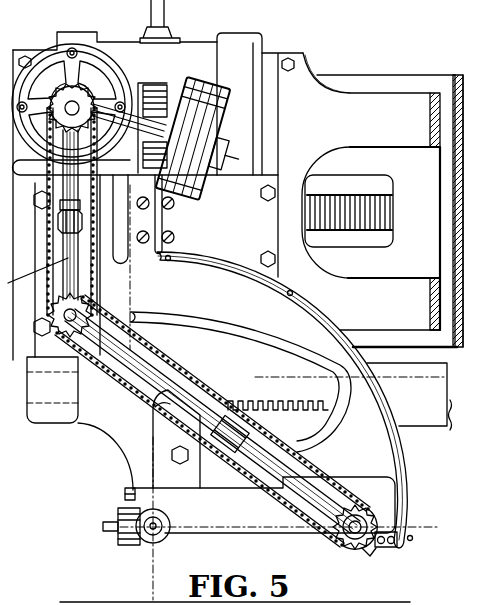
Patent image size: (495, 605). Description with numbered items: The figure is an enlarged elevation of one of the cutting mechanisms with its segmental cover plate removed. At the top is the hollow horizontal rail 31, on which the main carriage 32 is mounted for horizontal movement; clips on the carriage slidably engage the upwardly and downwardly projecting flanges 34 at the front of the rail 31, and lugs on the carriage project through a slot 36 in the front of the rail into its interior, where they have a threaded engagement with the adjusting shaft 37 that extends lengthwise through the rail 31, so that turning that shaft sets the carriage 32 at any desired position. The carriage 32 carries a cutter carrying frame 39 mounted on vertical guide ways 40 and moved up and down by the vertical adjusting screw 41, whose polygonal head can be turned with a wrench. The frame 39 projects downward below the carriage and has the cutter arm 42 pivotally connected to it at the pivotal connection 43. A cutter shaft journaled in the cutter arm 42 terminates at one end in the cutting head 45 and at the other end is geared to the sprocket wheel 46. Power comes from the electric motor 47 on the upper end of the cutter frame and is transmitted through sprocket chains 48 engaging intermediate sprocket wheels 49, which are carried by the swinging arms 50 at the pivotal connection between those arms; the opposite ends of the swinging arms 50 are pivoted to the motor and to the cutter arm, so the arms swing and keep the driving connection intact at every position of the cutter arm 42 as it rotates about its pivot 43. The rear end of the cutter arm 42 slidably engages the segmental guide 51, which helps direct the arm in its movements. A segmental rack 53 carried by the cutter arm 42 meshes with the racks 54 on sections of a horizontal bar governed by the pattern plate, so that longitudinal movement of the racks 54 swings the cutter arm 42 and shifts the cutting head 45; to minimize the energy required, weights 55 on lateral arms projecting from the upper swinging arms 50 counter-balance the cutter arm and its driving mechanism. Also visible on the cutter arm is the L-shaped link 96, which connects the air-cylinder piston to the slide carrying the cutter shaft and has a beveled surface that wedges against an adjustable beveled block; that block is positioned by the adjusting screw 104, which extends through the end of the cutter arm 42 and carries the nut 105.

The hollow horizontal rail portion 31 is at (385, 167).
The main carriage 32 is at (305, 83).
The flanges 34 is at (417, 87).
The slot 36 is at (397, 192).
The adjusting shaft 37 is at (330, 225).
The cutter carrying frame 39 is at (210, 230).
The vertical guide ways 40 is at (252, 38).
The vertical adjusting screw 41 is at (160, 90).
The cutter arm 42 is at (205, 518).
The pivotal connection 43 is at (165, 532).
The cutting head 45 is at (103, 528).
The sprocket wheel 46 is at (370, 550).
The electric motor 47 is at (55, 48).
The sprocket chains 48 is at (97, 280).
The intermediate sprocket wheels 49 is at (95, 310).
The swinging arms 50 is at (168, 370).
The segmental guide 51 is at (387, 440).
The segmental rack 53 is at (155, 408).
The racks 54 is at (253, 387).
The weights 55 is at (197, 80).
The L-shaped link 96 is at (200, 472).
The adjusting screw 104 is at (128, 496).
The nut 105 is at (127, 490).